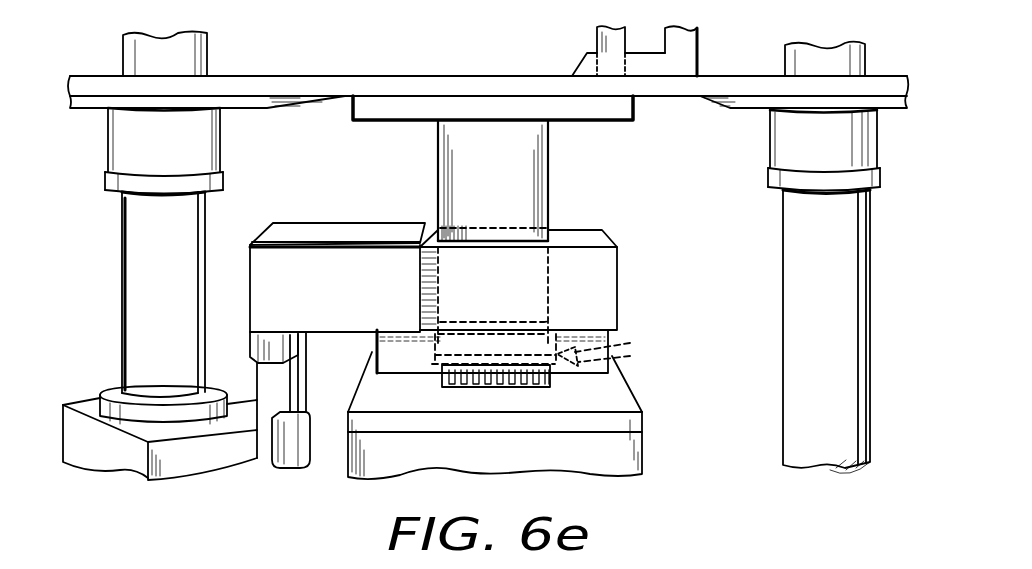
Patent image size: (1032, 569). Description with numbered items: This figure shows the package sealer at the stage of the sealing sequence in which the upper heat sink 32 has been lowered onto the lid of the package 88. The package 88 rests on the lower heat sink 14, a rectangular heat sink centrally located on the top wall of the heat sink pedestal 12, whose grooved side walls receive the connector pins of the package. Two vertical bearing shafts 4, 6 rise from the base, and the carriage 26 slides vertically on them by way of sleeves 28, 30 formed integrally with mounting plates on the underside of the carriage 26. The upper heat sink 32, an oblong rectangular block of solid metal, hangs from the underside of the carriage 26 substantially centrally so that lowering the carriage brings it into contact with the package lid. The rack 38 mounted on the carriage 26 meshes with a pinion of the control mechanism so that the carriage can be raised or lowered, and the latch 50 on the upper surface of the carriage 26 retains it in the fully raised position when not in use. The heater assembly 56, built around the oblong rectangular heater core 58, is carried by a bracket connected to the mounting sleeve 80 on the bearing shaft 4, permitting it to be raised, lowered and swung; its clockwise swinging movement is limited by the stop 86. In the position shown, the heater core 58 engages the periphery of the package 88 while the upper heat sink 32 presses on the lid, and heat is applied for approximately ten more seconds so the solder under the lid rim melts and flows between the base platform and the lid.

The carriage 26 is at (316, 48).
The rack 38 is at (602, 42).
The latch 50 is at (698, 48).
The sleeve 28 is at (222, 149).
The vertical bearing shaft 4 is at (208, 222).
The mounting sleeve 80 is at (94, 402).
The sleeve 30 is at (770, 151).
The vertical bearing shaft 6 is at (789, 238).
The upper heat sink 32 is at (549, 160).
The heater assembly 56 is at (619, 292).
The heater core 58 is at (578, 232).
The package 88 is at (613, 349).
The lower heat sink 14 is at (447, 386).
The heat sink pedestal 12 is at (650, 448).
The stop 86 is at (263, 458).